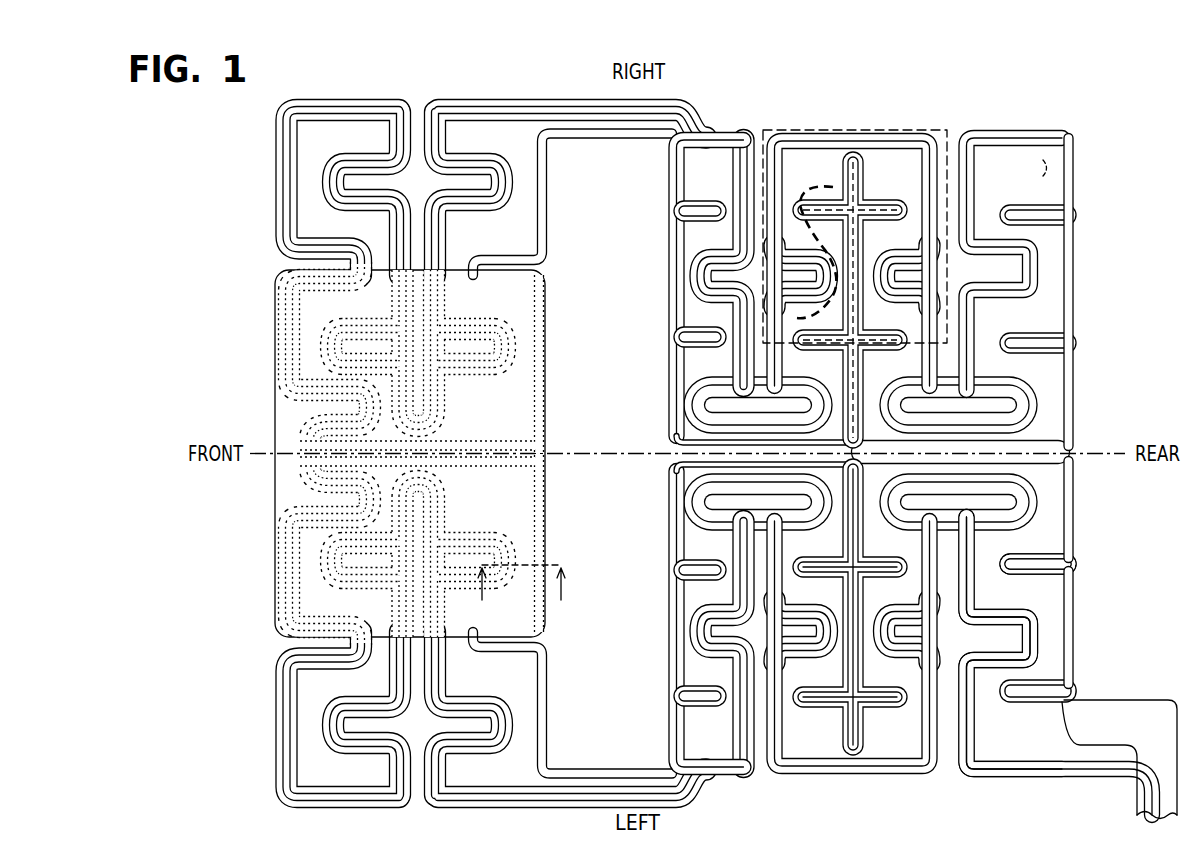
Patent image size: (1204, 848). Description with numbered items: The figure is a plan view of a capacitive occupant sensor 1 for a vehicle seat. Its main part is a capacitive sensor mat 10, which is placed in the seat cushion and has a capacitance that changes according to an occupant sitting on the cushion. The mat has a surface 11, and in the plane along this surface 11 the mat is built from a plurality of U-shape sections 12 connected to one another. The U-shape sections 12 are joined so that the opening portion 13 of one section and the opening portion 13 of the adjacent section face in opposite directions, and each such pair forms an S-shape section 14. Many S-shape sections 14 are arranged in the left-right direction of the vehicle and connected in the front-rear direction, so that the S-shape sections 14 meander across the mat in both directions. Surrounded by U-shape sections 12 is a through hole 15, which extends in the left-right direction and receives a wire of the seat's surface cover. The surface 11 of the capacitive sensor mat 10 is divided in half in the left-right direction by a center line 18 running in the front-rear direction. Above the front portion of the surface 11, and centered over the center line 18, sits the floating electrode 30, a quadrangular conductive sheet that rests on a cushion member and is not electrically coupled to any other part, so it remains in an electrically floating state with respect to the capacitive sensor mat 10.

The capacitive occupant sensor 1 is at (764, 94).
The capacitive sensor mat 10 is at (1031, 129).
The surface 11 is at (483, 138).
The U-shape section 12 is at (975, 166).
The opening portion 13 is at (896, 214).
The S-shape section 14 is at (800, 127).
The through hole 15 is at (598, 165).
The center line 18 is at (1112, 452).
The floating electrode 30 is at (276, 402).